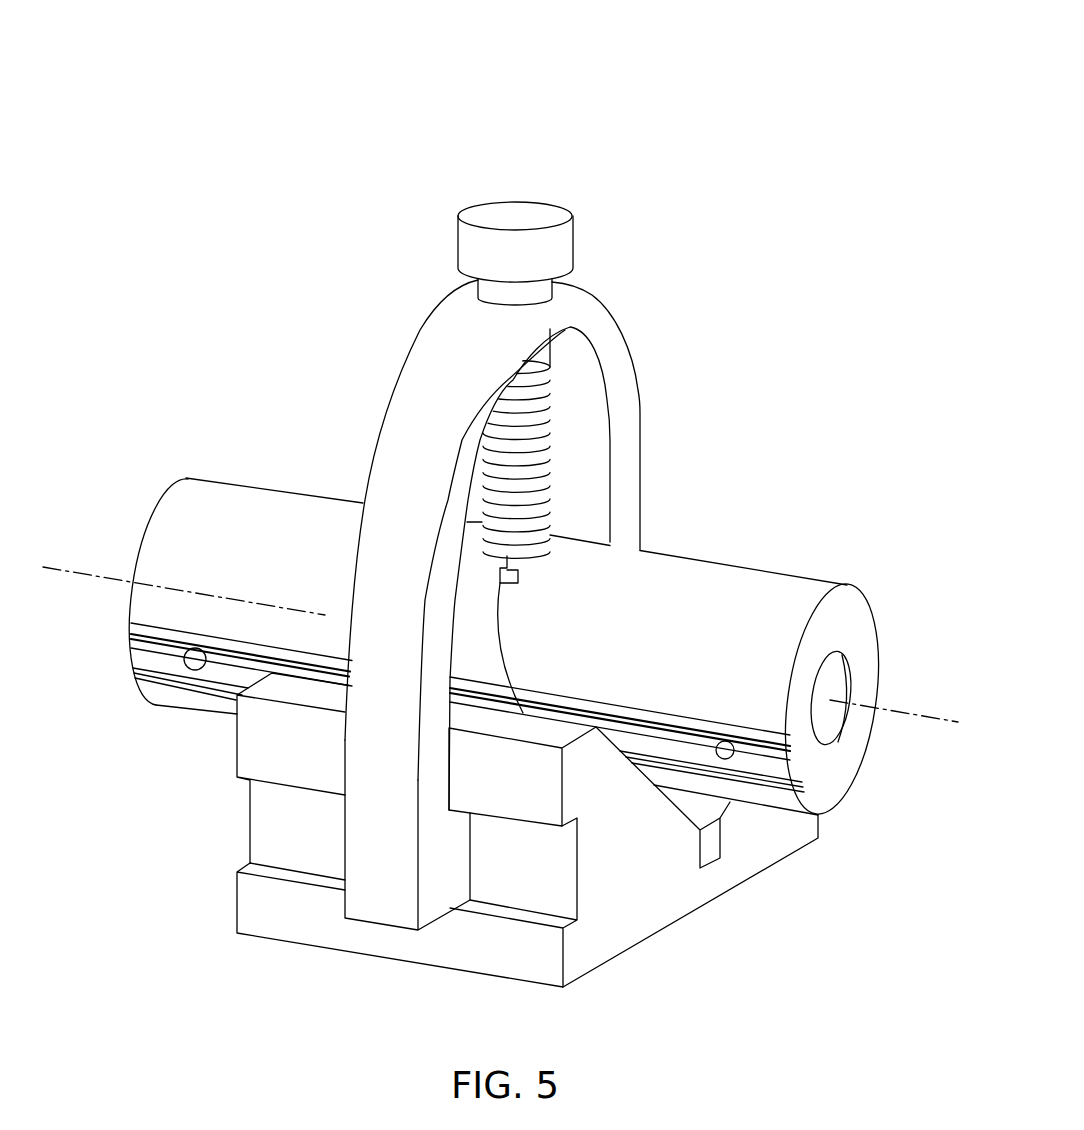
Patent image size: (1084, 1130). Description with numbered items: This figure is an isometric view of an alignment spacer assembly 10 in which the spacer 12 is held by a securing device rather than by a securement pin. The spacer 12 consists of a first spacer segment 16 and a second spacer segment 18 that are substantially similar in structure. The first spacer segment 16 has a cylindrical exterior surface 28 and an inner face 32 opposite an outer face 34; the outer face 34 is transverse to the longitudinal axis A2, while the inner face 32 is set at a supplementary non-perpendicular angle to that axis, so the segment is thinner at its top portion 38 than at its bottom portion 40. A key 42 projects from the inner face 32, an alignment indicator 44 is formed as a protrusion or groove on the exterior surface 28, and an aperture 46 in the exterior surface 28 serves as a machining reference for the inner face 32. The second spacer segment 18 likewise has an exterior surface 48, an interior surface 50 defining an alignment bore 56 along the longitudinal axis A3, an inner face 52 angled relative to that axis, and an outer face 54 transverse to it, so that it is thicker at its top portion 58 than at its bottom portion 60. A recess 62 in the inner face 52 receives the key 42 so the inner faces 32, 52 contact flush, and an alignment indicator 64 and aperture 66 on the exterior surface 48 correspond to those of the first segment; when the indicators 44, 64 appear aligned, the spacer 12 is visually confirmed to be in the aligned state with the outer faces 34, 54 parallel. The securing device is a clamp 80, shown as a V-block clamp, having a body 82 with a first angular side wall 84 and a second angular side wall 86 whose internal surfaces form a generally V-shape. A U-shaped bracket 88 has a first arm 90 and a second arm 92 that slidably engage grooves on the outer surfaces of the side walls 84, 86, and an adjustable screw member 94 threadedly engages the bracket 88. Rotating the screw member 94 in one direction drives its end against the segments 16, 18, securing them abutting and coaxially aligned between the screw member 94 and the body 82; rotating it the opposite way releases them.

The clamp assembly 10 is at (578, 97).
The spacer 12 is at (775, 272).
The first spacer segment 16 is at (303, 410).
The second spacer segment 18 is at (805, 465).
The exterior surface 28 is at (308, 507).
The inner face 32 is at (497, 608).
The outer face 34 is at (137, 552).
The top portion 38 is at (236, 492).
The bottom portion 40 is at (163, 707).
The key 42 is at (503, 575).
The alignment indicator 44 is at (258, 648).
The aperture 46 is at (195, 657).
The exterior surface 48 is at (805, 585).
The interior surface 50 is at (833, 740).
The inner face 52 is at (503, 657).
The outer face 54 is at (865, 645).
The alignment bore 56 is at (838, 662).
The top portion 58 is at (732, 575).
The bottom portion 60 is at (745, 803).
The recess 62 is at (525, 578).
The alignment indicator 64 is at (635, 713).
The aperture 66 is at (730, 745).
The clamp 80 is at (440, 185).
The body 82 is at (665, 975).
The first angular side wall 84 is at (253, 908).
The second angular side wall 86 is at (820, 828).
The U-shaped bracket 88 is at (420, 330).
The first arm 90 is at (363, 822).
The second arm 92 is at (627, 457).
The adjustable screw member 94 is at (523, 207).
The longitudinal axis A2 is at (97, 580).
The longitudinal axis A3 is at (918, 717).